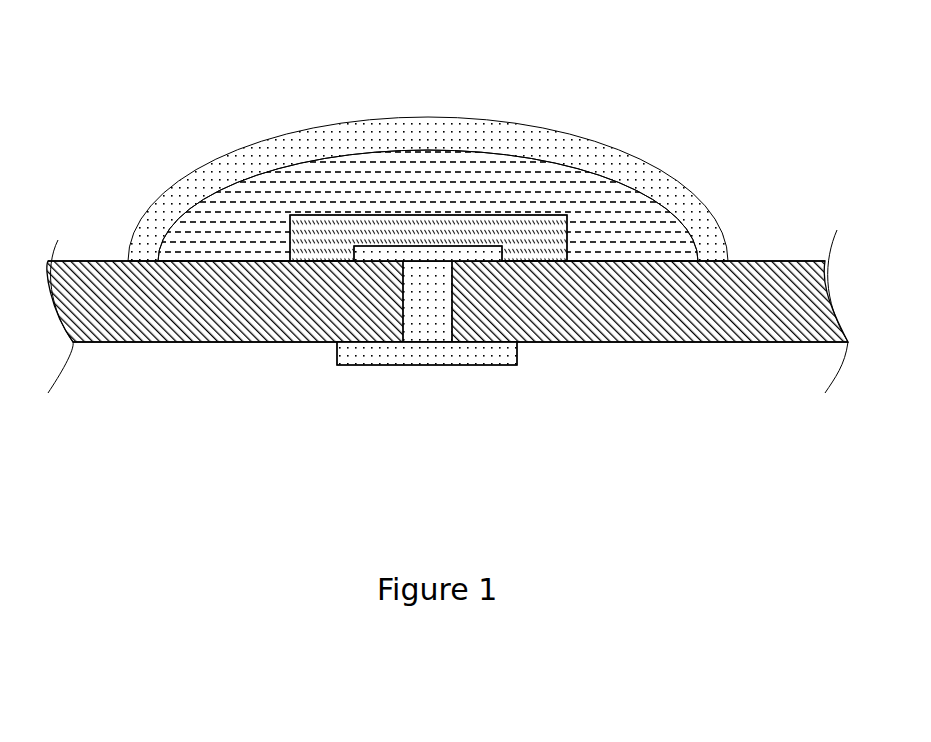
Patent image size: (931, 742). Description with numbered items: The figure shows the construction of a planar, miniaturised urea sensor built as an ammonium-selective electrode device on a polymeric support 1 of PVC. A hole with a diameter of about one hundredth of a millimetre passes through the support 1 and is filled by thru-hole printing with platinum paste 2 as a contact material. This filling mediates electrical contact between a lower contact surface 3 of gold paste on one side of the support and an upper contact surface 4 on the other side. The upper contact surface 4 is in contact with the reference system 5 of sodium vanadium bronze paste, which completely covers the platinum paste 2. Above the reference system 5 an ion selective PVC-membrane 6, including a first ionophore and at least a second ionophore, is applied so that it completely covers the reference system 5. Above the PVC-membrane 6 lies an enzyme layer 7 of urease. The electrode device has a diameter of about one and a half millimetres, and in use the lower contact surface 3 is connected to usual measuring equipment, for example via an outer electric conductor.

The polymeric support 1 is at (134, 329).
The platinum paste 2 is at (412, 328).
The lower contact surface 3 is at (510, 356).
The upper contact surface 4 is at (375, 242).
The reference system 5 is at (557, 225).
The ion selective PVC-membrane 6 is at (501, 165).
The enzyme layer 7 is at (440, 127).